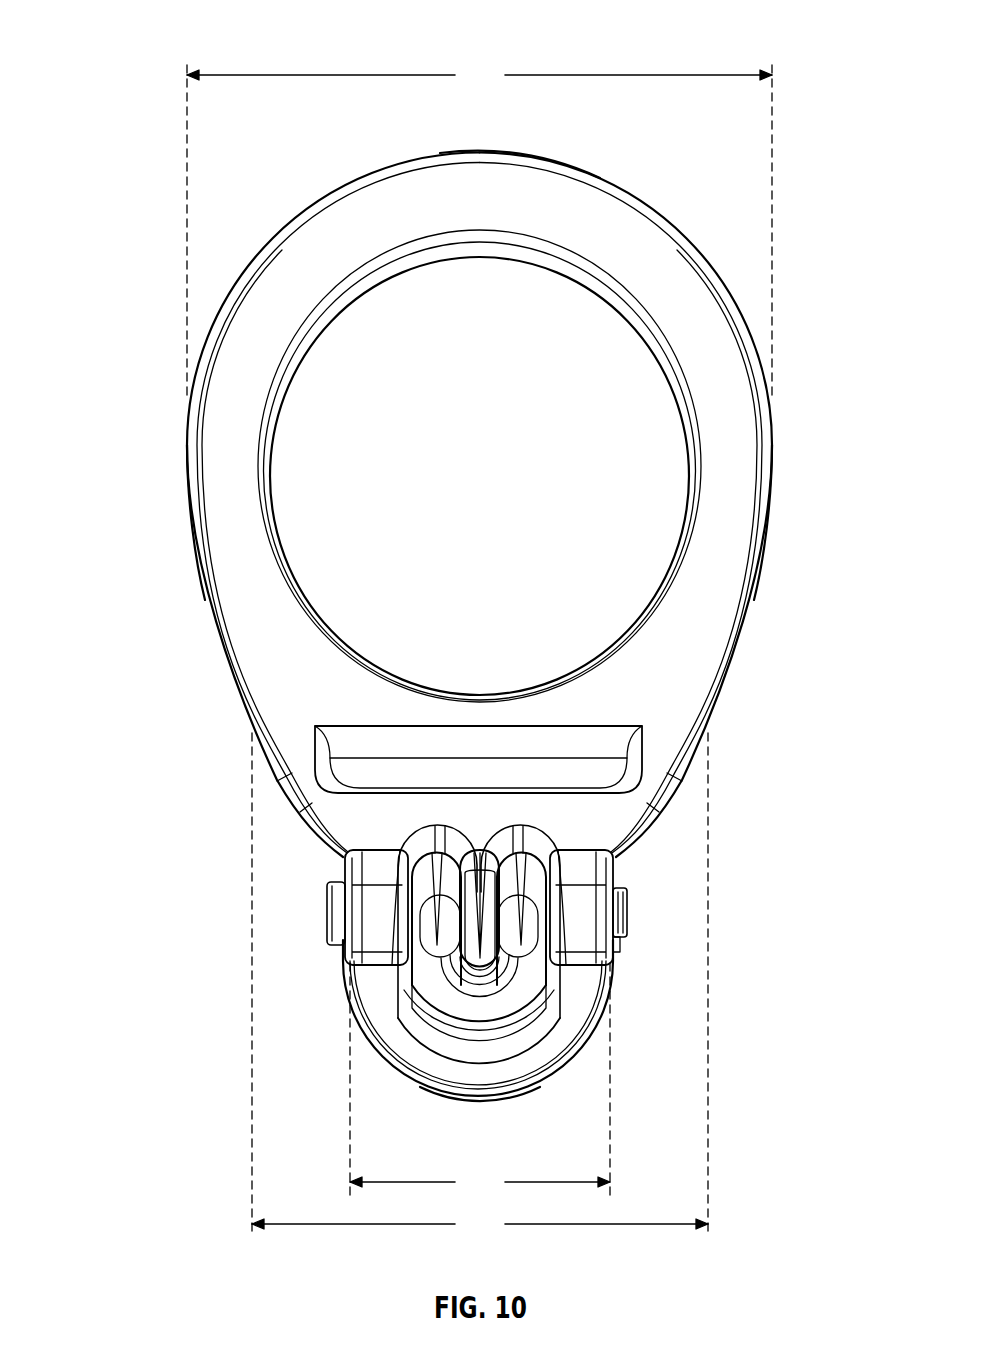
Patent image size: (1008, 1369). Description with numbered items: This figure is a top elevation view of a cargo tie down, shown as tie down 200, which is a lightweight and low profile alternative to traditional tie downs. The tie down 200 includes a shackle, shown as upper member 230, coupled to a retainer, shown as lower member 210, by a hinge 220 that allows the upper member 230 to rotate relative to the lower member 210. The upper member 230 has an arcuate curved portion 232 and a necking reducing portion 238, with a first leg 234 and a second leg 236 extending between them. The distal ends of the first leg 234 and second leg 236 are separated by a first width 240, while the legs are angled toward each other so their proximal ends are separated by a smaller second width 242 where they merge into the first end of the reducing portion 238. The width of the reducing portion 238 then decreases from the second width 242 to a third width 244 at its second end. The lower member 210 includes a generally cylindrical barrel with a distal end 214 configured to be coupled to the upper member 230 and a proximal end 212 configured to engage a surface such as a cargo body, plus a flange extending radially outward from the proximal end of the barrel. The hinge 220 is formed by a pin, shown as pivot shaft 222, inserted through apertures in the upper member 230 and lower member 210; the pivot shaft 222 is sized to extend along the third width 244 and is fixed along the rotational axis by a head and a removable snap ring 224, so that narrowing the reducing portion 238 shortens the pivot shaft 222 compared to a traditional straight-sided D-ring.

The tie down 200 is at (158, 34).
The lower member 210 is at (600, 1088).
The proximal end 212 is at (461, 1106).
The distal end 214 is at (523, 952).
The hinge 220 is at (646, 901).
The pivot shaft 222 is at (337, 921).
The snap ring 224 is at (620, 949).
The upper member 230 is at (693, 208).
The curved portion 232 is at (573, 193).
The first leg 234 is at (748, 488).
The second leg 236 is at (214, 488).
The reducing portion 238 is at (618, 815).
The first width 240 is at (479, 229).
The second width 242 is at (480, 987).
The third width 244 is at (480, 1081).